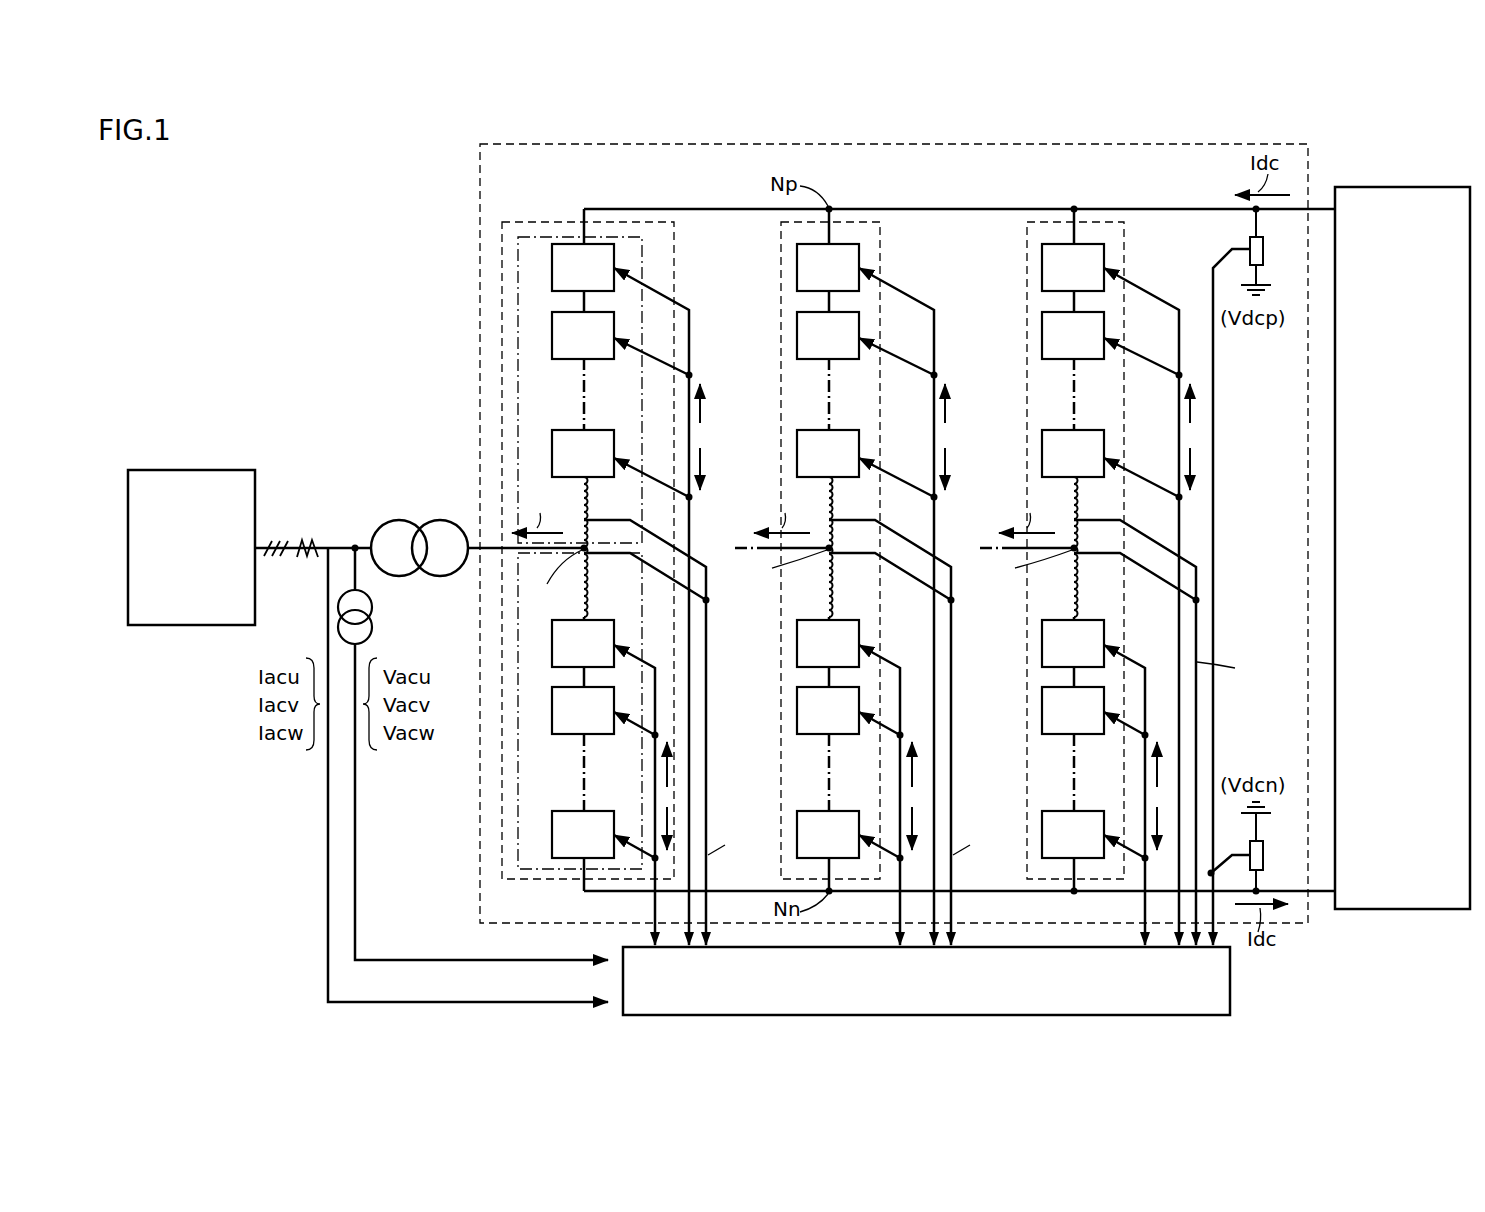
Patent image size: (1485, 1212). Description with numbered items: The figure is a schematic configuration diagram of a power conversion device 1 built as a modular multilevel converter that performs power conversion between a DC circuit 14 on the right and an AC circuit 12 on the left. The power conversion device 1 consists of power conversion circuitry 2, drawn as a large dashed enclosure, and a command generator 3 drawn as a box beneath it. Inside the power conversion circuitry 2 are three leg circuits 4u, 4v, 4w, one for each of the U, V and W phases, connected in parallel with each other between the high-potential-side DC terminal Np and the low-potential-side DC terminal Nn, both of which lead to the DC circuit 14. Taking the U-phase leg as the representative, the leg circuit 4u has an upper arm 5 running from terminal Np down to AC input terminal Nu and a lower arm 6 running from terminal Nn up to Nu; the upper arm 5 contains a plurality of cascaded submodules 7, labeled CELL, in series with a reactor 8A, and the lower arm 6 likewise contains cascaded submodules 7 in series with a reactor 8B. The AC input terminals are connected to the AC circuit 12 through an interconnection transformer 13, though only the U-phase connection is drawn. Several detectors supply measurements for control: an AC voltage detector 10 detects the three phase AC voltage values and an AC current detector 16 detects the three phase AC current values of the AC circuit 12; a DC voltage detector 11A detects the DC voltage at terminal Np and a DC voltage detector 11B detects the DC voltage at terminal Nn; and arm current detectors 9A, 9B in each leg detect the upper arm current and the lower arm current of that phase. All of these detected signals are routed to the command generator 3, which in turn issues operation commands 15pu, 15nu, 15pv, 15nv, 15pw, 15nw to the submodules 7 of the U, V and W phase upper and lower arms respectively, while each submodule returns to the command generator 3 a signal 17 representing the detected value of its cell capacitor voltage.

The power conversion device 1 is at (430, 242).
The power conversion circuitry 2 is at (480, 191).
The command generator 3 is at (1230, 995).
The leg circuit 4u is at (523, 222).
The leg circuit 4v is at (863, 222).
The leg circuit 4w is at (1105, 222).
The upper arm 5 is at (518, 378).
The lower arm 6 is at (518, 768).
The submodule 7 is at (552, 835).
The reactor 8A is at (594, 502).
The reactor 8B is at (594, 600).
The arm current detector 9A is at (592, 532).
The arm current detector 9B is at (592, 566).
The AC voltage detector 10 is at (368, 610).
The DC voltage detector 11A is at (1263, 256).
The DC voltage detector 11B is at (1263, 858).
The AC circuit 12 is at (190, 470).
The interconnection transformer 13 is at (392, 522).
The DC circuit 14 is at (1400, 187).
The operation command 15pu is at (704, 408).
The operation command 15pv is at (949, 408).
The operation command 15pw is at (1194, 408).
The operation command 15nu is at (670, 775).
The operation command 15nv is at (915, 775).
The operation command 15nw is at (1160, 767).
The AC current detector 16 is at (308, 538).
The signal 17 is at (962, 649).